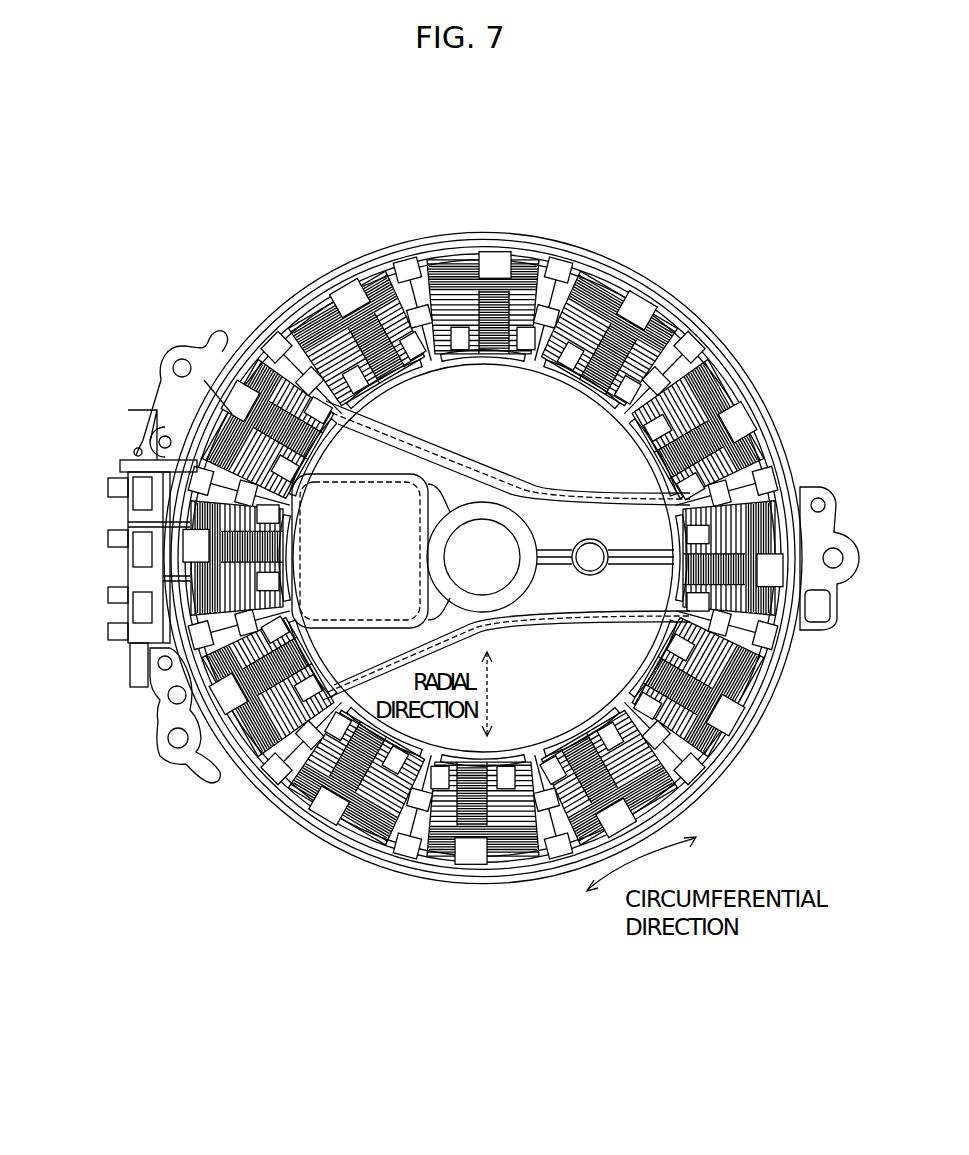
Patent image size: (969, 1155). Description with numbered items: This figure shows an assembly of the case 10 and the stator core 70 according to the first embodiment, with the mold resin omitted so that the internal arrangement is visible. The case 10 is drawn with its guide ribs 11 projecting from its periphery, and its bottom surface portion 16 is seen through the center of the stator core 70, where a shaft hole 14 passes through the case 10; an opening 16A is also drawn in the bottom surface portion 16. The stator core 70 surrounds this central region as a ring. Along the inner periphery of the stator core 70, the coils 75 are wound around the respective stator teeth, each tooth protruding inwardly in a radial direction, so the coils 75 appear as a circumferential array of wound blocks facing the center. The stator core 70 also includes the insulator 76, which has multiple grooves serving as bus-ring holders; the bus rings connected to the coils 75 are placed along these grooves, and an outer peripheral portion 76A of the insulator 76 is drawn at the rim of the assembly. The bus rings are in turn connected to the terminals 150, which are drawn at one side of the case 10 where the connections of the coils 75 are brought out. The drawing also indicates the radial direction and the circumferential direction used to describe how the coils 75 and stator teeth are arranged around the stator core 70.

The stator core 70 is at (492, 512).
The case 10 is at (167, 340).
The coils 75 is at (482, 543).
The outer peripheral portion of stator core 76A is at (492, 557).
The insulator 76 is at (496, 558).
The guide ribs 11 is at (840, 518).
The terminals 150 is at (114, 590).
The bottom surface portion 16 is at (491, 544).
The opening 16A is at (388, 495).
The shaft hole 14 is at (494, 580).